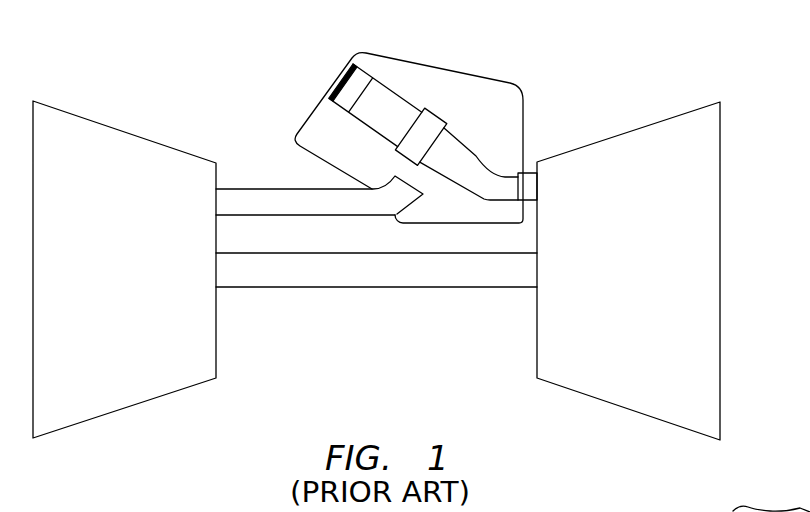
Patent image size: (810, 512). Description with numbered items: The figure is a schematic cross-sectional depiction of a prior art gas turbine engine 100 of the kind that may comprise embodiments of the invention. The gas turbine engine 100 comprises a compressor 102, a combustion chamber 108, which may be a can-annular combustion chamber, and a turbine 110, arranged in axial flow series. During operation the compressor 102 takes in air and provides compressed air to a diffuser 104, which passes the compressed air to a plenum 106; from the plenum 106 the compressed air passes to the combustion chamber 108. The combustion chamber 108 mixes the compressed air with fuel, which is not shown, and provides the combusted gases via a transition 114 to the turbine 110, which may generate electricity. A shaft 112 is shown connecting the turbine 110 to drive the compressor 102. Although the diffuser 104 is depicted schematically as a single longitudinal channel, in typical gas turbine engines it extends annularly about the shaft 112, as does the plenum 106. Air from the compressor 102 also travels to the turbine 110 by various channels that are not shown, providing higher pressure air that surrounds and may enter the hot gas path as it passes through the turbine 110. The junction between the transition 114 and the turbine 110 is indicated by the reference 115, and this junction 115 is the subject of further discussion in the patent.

The gas turbine engine 100 is at (208, 68).
The compressor 102 is at (148, 282).
The diffuser 104 is at (290, 187).
The plenum 106 is at (444, 92).
The combustion chamber 108 is at (387, 112).
The turbine 110 is at (650, 282).
The shaft 112 is at (397, 286).
The transition 114 is at (450, 157).
The junction 115 is at (528, 172).